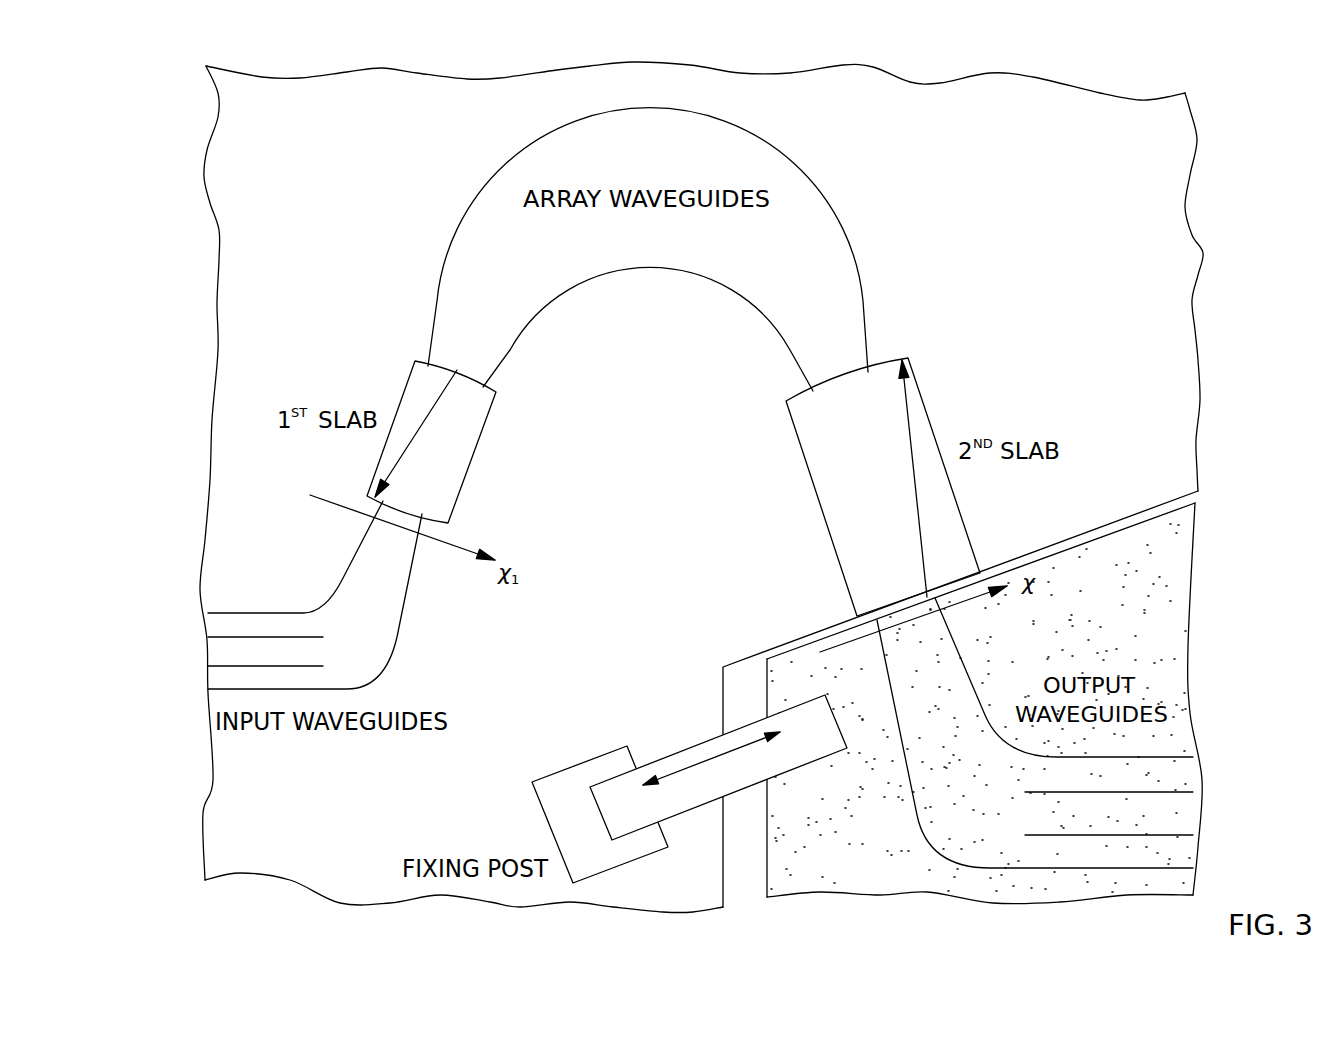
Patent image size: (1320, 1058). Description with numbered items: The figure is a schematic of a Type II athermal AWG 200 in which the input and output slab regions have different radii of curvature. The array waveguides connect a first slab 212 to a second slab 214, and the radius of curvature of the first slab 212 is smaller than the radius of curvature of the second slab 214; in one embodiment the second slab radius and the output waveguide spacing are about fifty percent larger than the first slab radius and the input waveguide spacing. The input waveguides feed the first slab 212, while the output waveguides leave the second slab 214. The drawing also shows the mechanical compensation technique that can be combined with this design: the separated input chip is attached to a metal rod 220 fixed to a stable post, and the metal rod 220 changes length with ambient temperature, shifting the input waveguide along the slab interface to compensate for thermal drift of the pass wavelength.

The Type II athermal AWG 200 is at (647, 422).
The first slab 212 is at (473, 458).
The second slab 214 is at (800, 450).
The metal rod 220 is at (677, 747).